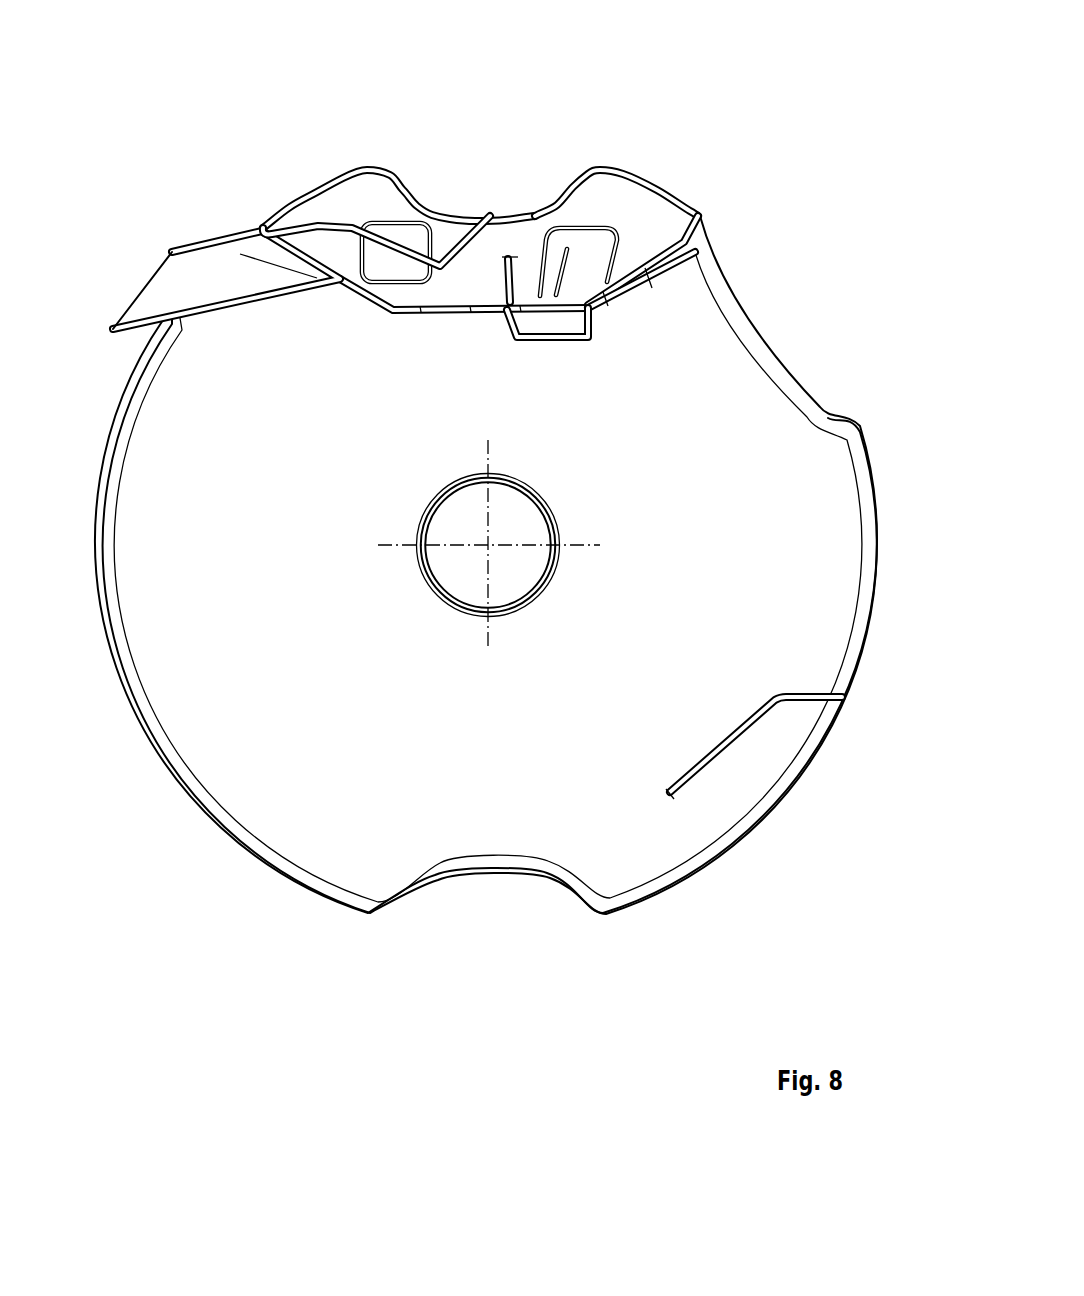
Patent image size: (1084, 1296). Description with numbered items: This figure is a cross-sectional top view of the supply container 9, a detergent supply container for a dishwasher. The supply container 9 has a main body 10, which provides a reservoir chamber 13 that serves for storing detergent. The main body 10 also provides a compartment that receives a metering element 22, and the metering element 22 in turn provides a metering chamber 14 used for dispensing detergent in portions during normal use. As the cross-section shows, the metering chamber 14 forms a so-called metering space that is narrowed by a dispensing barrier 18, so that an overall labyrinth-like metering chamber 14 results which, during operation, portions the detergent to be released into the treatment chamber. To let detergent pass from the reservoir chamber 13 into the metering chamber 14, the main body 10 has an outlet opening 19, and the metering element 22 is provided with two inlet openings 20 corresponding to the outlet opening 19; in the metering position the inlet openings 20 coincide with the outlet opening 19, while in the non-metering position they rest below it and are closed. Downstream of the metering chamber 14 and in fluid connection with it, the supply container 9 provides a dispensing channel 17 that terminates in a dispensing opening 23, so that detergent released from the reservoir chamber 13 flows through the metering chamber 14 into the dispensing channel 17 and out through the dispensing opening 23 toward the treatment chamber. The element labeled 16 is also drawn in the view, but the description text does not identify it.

The supply container 9 is at (140, 858).
The main body 10 is at (287, 877).
The reservoir chamber 13 is at (415, 800).
The metering chamber 14 is at (609, 199).
The side wall 16 is at (657, 227).
The dispensing channel 17 is at (200, 242).
The dispensing barrier 18 is at (509, 258).
The outlet opening 19 is at (600, 311).
The inlet openings 20 is at (598, 295).
The metering element 22 is at (650, 187).
The dispensing opening 23 is at (140, 289).